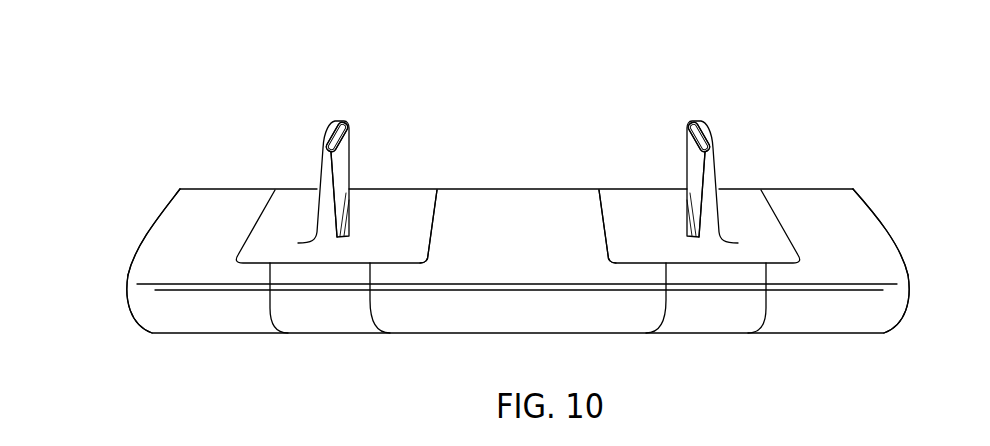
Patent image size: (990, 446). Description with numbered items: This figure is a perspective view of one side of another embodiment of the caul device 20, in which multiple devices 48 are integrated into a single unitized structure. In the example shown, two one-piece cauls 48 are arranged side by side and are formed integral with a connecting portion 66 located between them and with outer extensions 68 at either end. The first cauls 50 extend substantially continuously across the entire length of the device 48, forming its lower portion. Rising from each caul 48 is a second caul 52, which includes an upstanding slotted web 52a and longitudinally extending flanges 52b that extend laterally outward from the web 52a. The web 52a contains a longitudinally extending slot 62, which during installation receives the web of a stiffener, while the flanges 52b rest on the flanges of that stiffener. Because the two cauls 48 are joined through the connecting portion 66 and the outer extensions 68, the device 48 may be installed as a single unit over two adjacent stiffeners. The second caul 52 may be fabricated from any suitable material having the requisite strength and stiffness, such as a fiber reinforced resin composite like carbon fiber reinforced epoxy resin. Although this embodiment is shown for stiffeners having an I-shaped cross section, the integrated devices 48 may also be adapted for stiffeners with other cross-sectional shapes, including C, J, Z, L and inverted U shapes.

The caul device 20 is at (866, 96).
The one piece caul 48 is at (888, 188).
The first caul 50 is at (183, 308).
The second caul 52 is at (302, 158).
The slotted web 52a is at (342, 157).
The flange 52b is at (275, 217).
The slot 62 is at (335, 113).
The connecting portion 66 is at (523, 220).
The outer extension 68 is at (215, 217).